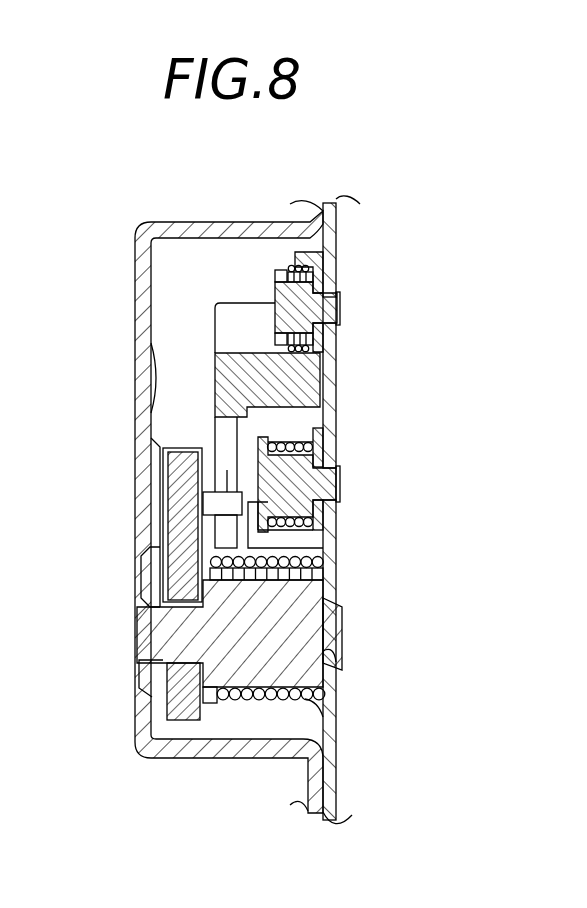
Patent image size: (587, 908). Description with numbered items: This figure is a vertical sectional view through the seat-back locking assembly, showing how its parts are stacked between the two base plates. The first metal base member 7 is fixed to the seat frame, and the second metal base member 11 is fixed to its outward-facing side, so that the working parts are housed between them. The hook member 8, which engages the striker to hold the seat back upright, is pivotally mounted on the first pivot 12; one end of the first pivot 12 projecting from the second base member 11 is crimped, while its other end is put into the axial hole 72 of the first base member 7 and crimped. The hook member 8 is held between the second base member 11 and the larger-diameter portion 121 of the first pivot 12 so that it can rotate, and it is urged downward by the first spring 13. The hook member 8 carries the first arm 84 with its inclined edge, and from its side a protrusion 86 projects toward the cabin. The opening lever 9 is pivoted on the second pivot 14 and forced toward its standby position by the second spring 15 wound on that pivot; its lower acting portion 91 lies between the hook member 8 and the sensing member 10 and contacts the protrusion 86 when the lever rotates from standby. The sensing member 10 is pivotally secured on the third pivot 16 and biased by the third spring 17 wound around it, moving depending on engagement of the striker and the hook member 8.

The first metal base member 7 is at (337, 268).
The hook member 8 is at (167, 533).
The opening lever 9 is at (214, 370).
The sensing member 10 is at (317, 456).
The second metal base member 11 is at (188, 222).
The first pivot 12 is at (343, 613).
The first spring 13 is at (304, 698).
The second pivot 14 is at (270, 287).
The second spring 15 is at (295, 258).
The third pivot 16 is at (341, 487).
The third spring 17 is at (293, 443).
The axial hole 72 is at (331, 650).
The first arm 84 is at (166, 712).
The protrusion 86 is at (227, 490).
The acting portion 91 is at (160, 566).
The larger-diameter portion 121 is at (211, 690).